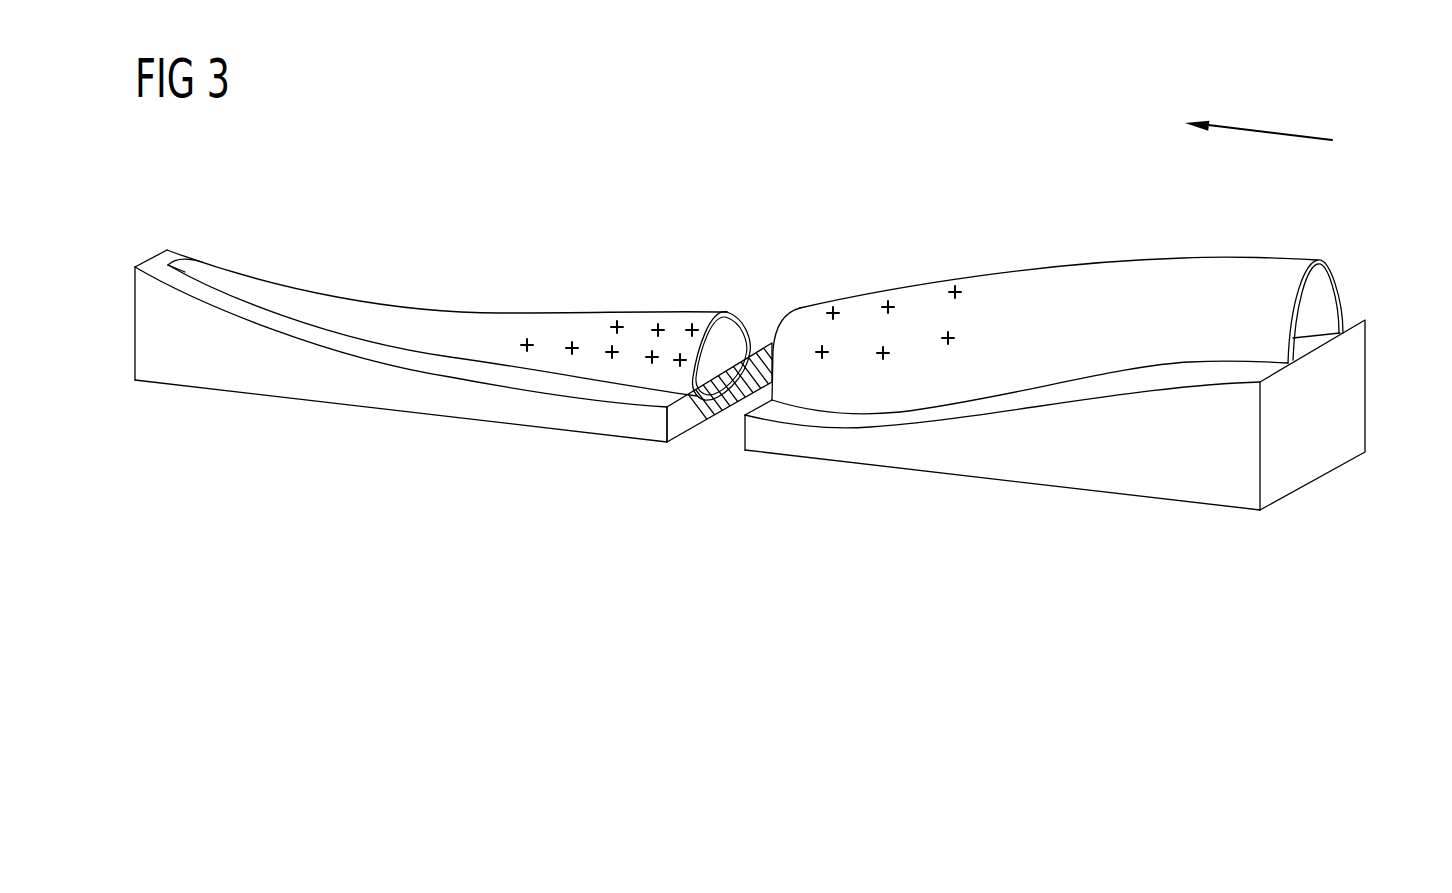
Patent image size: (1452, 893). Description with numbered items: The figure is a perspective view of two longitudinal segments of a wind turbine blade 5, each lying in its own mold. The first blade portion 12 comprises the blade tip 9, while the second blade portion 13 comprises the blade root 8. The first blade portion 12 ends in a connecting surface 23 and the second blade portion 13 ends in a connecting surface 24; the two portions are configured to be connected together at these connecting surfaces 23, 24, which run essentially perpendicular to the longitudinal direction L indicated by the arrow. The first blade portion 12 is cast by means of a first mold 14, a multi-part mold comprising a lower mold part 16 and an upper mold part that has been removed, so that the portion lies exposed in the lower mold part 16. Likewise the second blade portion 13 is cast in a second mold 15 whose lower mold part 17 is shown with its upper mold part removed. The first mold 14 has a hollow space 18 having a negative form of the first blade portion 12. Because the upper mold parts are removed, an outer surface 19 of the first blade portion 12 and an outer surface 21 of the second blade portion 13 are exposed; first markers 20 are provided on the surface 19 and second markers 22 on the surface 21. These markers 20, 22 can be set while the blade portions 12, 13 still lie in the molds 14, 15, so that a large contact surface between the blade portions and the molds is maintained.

The blade 5 is at (829, 120).
The blade root 8 is at (1318, 260).
The blade tip 9 is at (191, 264).
The blade portion 12 is at (609, 296).
The blade portion 13 is at (1048, 247).
The mold 14 is at (448, 432).
The mold 15 is at (999, 505).
The lower mold part 16 is at (568, 432).
The lower mold part 17 is at (1367, 387).
The hollow space 18 is at (712, 414).
The outer surface 19 is at (554, 315).
The markers 20 is at (677, 356).
The outer surface 21 is at (939, 284).
The markers 22 is at (835, 300).
The connecting surface 23 is at (747, 326).
The connecting surface 24 is at (792, 308).
The longitudinal direction L is at (1263, 128).